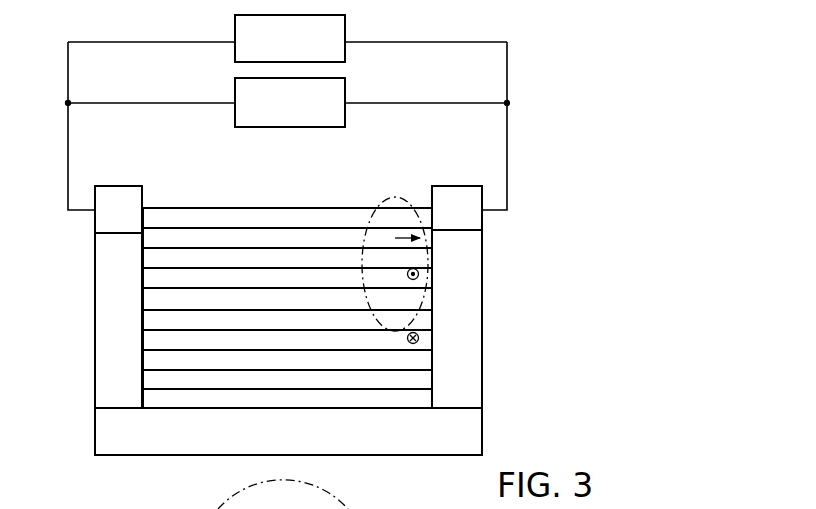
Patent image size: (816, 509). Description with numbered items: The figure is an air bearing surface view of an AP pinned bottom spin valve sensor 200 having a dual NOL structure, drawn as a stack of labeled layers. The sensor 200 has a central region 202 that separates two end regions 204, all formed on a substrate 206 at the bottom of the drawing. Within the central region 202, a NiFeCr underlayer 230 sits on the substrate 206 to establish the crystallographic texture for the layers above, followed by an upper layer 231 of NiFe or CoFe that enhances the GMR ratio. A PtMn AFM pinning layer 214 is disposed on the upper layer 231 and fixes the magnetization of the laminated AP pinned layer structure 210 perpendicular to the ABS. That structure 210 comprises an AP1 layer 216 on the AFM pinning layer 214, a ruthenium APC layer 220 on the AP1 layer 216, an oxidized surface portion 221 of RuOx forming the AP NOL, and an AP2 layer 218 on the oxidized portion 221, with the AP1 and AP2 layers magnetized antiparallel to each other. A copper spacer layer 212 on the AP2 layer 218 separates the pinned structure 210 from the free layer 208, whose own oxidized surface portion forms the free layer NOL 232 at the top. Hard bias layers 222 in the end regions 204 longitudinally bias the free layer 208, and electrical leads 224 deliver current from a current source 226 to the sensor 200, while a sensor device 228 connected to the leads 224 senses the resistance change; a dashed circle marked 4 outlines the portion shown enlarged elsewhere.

The spin valve sensor 200 is at (40, 258).
The central region 202 is at (430, 185).
The end regions 204 is at (142, 185).
The substrate 206 is at (395, 442).
The free layer 208 is at (498, 250).
The AP pinned layer structure 210 is at (140, 268).
The spacer layer 212 is at (432, 258).
The AFM pinning layer 214 is at (145, 359).
The AP1 layer 216 is at (432, 341).
The AP2 layer 218 is at (432, 278).
The APC layer 220 is at (432, 320).
The oxidized surface portion 221 is at (432, 299).
The hard bias layers 222 is at (110, 278).
The electrical leads 224 is at (110, 226).
The current source 226 is at (345, 82).
The sensor device 228 is at (345, 18).
The underlayer 230 is at (143, 398).
The upper layer 231 is at (145, 379).
The free layer NOL 232 is at (205, 217).
The detail region shown in FIG. 4 is at (402, 194).